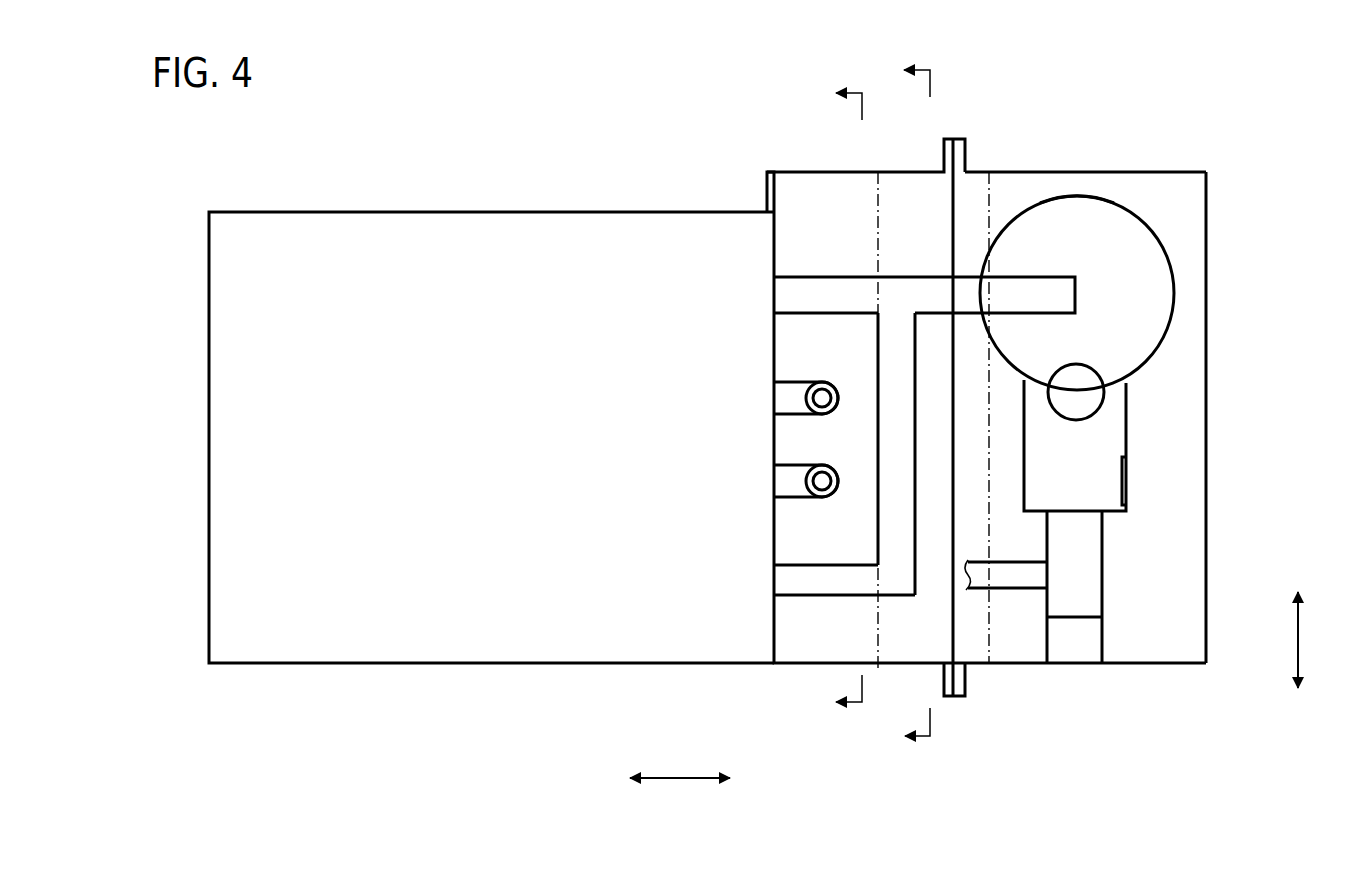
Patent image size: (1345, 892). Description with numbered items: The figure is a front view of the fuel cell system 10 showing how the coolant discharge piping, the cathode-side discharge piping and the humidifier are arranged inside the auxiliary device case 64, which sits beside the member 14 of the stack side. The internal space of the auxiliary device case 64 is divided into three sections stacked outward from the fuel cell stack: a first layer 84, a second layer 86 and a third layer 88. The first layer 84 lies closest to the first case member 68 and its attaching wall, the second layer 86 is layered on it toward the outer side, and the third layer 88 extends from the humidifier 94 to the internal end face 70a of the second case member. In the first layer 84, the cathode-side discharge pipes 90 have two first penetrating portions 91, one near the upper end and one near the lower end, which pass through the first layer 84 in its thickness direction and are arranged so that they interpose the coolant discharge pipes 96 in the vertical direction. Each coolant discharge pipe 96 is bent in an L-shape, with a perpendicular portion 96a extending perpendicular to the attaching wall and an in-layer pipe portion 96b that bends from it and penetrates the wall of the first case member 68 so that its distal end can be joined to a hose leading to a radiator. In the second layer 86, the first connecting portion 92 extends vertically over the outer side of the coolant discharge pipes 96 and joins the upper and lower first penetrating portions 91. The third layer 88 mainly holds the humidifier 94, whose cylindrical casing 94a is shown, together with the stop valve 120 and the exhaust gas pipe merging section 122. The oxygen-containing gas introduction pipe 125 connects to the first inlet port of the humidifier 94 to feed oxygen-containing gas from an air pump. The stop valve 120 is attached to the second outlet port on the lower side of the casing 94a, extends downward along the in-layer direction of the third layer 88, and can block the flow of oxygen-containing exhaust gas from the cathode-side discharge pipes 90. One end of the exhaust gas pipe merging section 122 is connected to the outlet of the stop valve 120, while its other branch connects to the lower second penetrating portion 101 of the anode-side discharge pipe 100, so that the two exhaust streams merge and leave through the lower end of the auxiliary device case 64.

The fuel cell system 10 is at (387, 196).
The housing 14 is at (455, 211).
The auxiliary device case 64 is at (785, 111).
The first case member 68 is at (790, 172).
The first layer 84 is at (817, 186).
The second layer 86 is at (893, 186).
The third layer 88 is at (1154, 187).
The cathode-side discharge pipes 90 is at (912, 276).
The first penetrating portions 91 is at (884, 275).
The first connecting portion 92 is at (895, 527).
The humidifier 94 is at (1173, 281).
The cylindrical casing 94a is at (1068, 212).
The coolant discharge pipes 96 is at (795, 482).
The perpendicular portion 96a is at (797, 381).
The in-layer pipe portion 96b is at (840, 397).
The anode-side discharge pipes 100 is at (1027, 633).
The second penetrating portions 101 is at (1025, 590).
The stop valve 120 is at (1126, 434).
The exhaust gas pipe merging section 122 is at (1097, 571).
The oxygen-containing gas introduction pipe 125 is at (1078, 365).
The internal end face 70a is at (1192, 487).